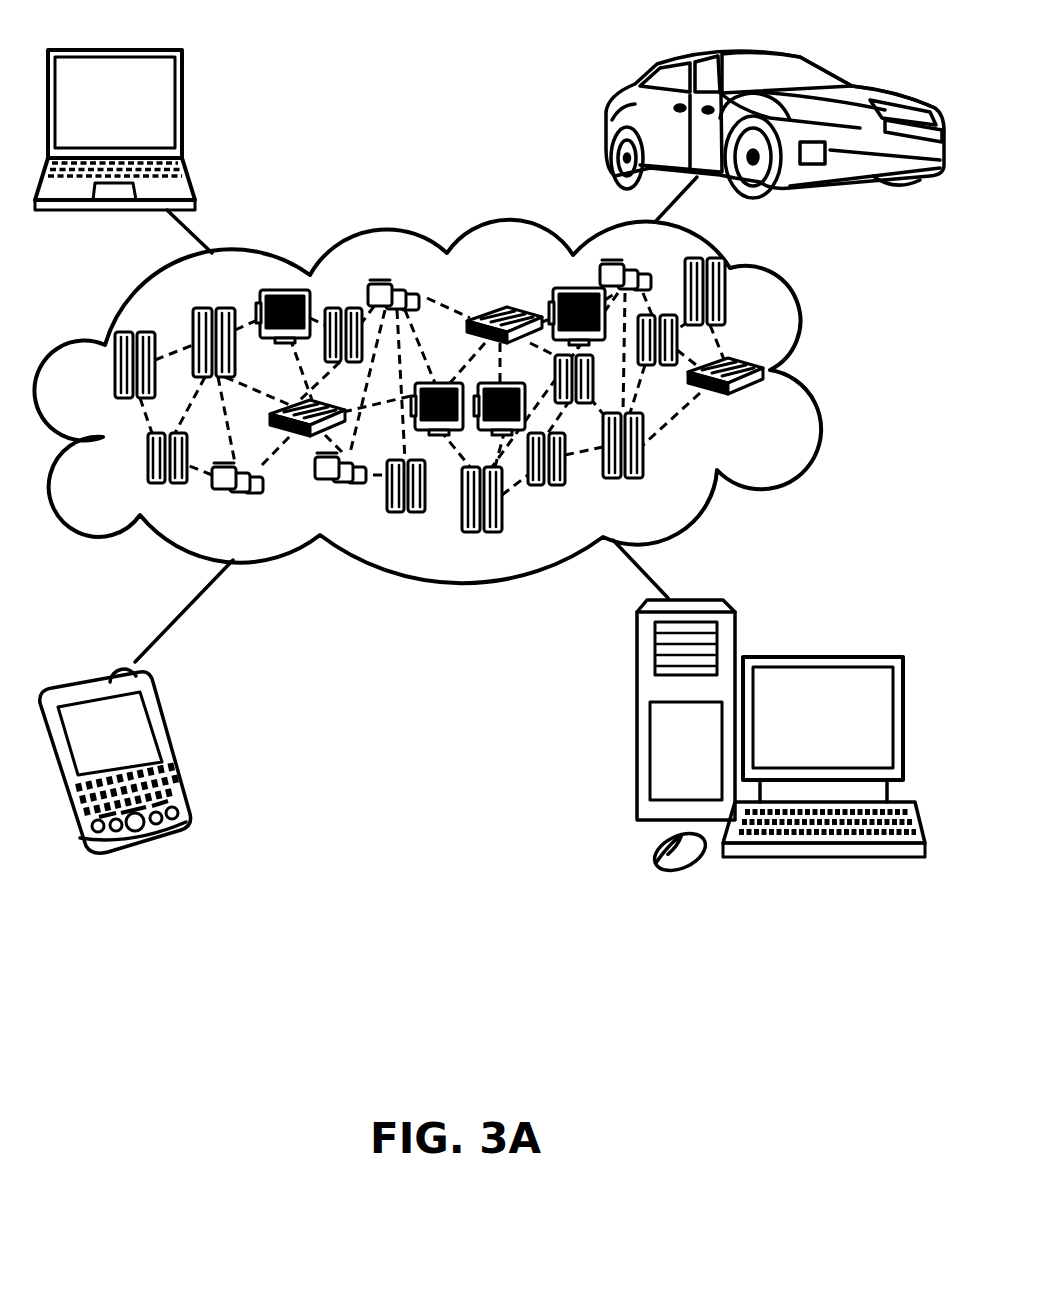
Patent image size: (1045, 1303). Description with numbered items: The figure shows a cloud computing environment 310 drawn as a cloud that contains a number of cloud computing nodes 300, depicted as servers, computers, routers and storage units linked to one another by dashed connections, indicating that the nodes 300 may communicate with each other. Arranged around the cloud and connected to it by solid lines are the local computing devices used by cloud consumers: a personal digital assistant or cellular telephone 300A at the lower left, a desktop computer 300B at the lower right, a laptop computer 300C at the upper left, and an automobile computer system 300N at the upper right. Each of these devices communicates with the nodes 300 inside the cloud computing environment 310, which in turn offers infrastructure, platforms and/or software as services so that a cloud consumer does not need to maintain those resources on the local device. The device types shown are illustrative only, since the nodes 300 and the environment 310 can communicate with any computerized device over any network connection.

The cloud computing nodes 300 is at (464, 401).
The cloud computing environment 310 is at (820, 378).
The personal digital assistant (PDA) or cellular telephone 300A is at (172, 748).
The desktop computer 300B is at (820, 656).
The laptop computer 300C is at (182, 109).
The automobile computer system 300N is at (606, 125).